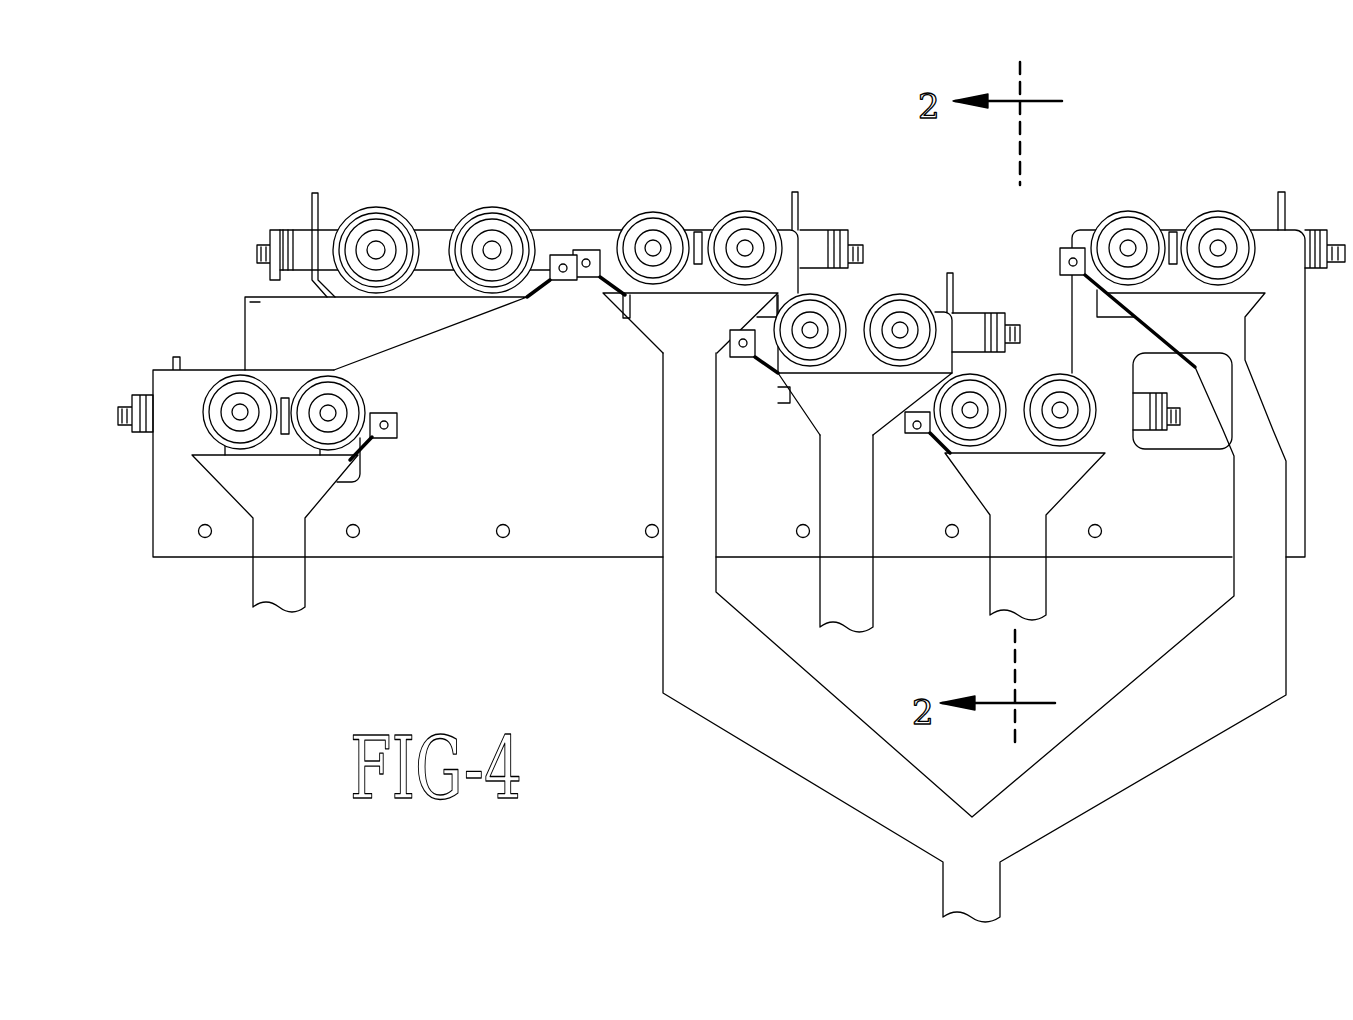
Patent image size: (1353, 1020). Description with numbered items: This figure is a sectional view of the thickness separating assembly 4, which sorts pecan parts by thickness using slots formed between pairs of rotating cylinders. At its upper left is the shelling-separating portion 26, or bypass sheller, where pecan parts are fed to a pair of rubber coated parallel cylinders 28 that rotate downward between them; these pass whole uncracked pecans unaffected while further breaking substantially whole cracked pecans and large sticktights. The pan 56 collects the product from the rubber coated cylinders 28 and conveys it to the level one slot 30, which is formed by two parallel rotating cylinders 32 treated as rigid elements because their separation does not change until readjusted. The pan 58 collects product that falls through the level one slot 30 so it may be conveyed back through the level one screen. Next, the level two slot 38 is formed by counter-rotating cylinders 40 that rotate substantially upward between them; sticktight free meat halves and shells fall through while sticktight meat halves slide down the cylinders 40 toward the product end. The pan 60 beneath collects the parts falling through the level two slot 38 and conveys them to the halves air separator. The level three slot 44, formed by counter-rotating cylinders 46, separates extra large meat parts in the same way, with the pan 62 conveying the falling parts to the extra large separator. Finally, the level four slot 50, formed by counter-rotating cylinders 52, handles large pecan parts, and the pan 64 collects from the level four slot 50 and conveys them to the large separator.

The thickness separating assembly 4 is at (862, 195).
The shelling-separating portion 26 is at (408, 115).
The rubber coated parallel cylinders 28 is at (495, 207).
The level one slot 30 is at (285, 420).
The parallel rotating cylinders 32 is at (235, 378).
The level two slot 38 is at (698, 238).
The counter-rotating cylinders 40 is at (650, 212).
The level three slot 44 is at (855, 313).
The counter-rotating cylinders 46 is at (797, 375).
The level four slot 50 is at (1014, 433).
The counter-rotating cylinders 52 is at (978, 455).
The pan 56 is at (433, 317).
The pan 58 is at (273, 540).
The pan 60 is at (698, 443).
The pan 62 is at (848, 510).
The pan 64 is at (1019, 543).